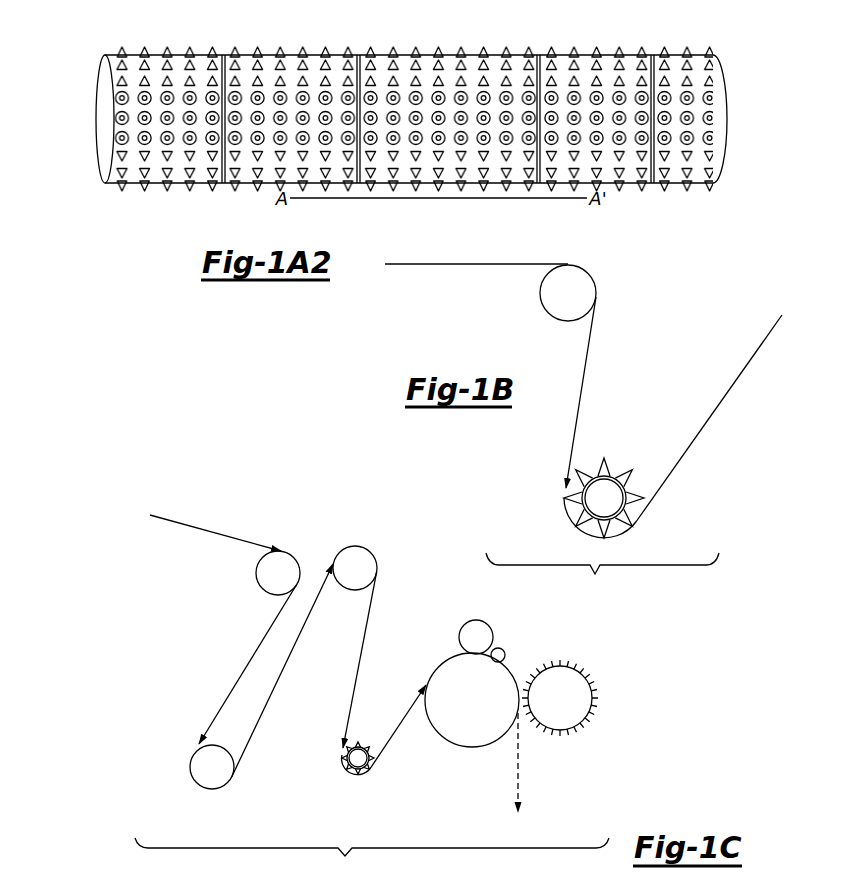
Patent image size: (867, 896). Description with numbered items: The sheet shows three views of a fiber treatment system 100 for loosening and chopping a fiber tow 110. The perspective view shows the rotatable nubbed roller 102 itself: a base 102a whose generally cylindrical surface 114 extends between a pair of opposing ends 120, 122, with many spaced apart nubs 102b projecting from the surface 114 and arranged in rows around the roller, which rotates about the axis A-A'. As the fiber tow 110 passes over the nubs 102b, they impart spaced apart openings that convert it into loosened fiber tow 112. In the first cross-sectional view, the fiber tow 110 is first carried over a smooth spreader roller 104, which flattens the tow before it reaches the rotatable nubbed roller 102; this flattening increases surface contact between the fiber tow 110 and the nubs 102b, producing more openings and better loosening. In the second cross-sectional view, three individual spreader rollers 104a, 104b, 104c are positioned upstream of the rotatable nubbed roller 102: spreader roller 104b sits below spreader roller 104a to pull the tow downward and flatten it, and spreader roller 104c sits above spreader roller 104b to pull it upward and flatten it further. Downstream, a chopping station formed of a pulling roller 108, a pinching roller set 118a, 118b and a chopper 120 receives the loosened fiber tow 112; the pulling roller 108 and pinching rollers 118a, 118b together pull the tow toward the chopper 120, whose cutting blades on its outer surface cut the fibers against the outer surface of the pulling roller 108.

In FIG. 1A2, the fiber treatment system 100 is at (258, 0).
In FIG. 1B, the fiber treatment system 100 is at (602, 577).
In FIG. 1C, the fiber treatment system 100 is at (372, 859).
In FIG. 1C, the rotatable nubbed roller 102 is at (372, 778).
In FIG. 1B, the base 102a is at (618, 523).
In FIG. 1A2, the spaced apart nubs 102b is at (615, 53).
In FIG. 1B, the spaced apart nubs 102b is at (626, 464).
In FIG. 1B, the spreader roller 104 is at (558, 306).
In FIG. 1C, the spreader roller 104a is at (267, 585).
In FIG. 1C, the spreader roller 104b is at (201, 779).
In FIG. 1C, the spreader roller 104c is at (344, 580).
In FIG. 1C, the pulling roller 108 is at (460, 708).
In FIG. 1B, the fiber tow 110 is at (476, 264).
In FIG. 1C, the fiber tow 110 is at (227, 540).
In FIG. 1B, the loosened fiber tow 112 is at (731, 389).
In FIG. 1C, the loosened fiber tow 112 is at (393, 730).
In FIG. 1B, the surface 114 is at (594, 528).
In FIG. 1C, the pinching roller 118a is at (476, 630).
In FIG. 1C, the pinching roller 118b is at (504, 650).
In FIG. 1A2, the chopper 120 is at (100, 103).
In FIG. 1C, the chopper 120 is at (548, 704).
In FIG. 1A2, the opposing end 122 is at (732, 108).